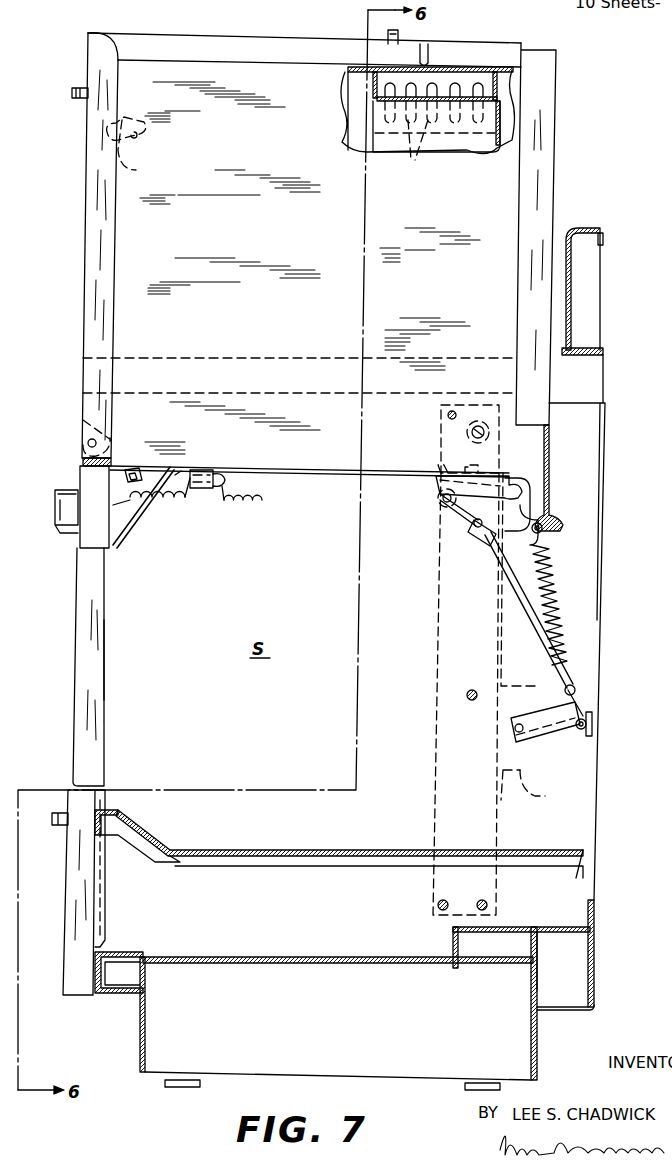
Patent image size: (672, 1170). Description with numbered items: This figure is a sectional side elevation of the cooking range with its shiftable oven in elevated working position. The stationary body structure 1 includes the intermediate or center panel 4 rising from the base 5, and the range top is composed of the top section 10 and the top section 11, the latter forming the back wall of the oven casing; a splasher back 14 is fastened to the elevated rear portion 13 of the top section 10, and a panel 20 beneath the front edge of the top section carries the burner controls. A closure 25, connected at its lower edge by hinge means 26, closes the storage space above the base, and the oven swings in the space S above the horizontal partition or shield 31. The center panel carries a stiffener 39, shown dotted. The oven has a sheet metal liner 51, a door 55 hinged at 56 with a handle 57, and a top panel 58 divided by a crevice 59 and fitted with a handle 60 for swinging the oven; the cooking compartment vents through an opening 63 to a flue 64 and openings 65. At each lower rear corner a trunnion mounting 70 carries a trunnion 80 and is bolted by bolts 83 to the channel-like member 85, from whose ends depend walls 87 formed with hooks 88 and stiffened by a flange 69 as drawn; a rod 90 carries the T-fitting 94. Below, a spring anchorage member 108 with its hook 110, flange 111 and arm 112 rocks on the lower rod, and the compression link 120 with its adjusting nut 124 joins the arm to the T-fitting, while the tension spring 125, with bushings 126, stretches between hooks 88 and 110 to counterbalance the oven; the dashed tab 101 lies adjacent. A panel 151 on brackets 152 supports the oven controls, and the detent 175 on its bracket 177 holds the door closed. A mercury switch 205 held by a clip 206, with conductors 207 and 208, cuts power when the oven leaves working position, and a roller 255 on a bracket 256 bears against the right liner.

The body structure 1 is at (68, 658).
The intermediate or center panel 4 is at (128, 707).
The base 5 is at (138, 1046).
The top section 10 is at (250, 350).
The top section 11 is at (546, 115).
The elevated rear portion 13 is at (574, 362).
The splasher back 14 is at (571, 280).
The panel 20 is at (110, 468).
The closure 25 is at (72, 900).
The hinge means 26 is at (94, 998).
The horizontal partition or shield 31 is at (250, 854).
The stiffener 39 is at (440, 706).
The sheet metal liner 51 is at (348, 87).
The door 55 is at (94, 238).
The hinge 56 is at (90, 430).
The handle 57 is at (59, 78).
The panel 58 is at (274, 43).
The crevice 59 is at (430, 44).
The handle 60 is at (386, 30).
The opening 63 is at (435, 95).
The flue 64 is at (352, 114).
The openings 65 is at (422, 152).
The latch member 69 is at (534, 495).
The trunnion mounting 70 is at (436, 432).
The trunnion 80 is at (478, 425).
The bolts 83 is at (440, 462).
The channel-like member 85 is at (440, 480).
The wall 87 is at (442, 498).
The spring connection or hook 88 is at (540, 526).
The rod 90 is at (442, 515).
The T-fitting 94 is at (474, 526).
The plate tab 101 is at (549, 790).
The spring anchorage member 108 is at (555, 742).
The spring anchorage hook 110 is at (590, 720).
The flange 111 is at (530, 710).
The arm 112 is at (549, 704).
The compression link 120 is at (502, 578).
The adjusting nut 124 is at (480, 542).
The tension spring 125 is at (544, 562).
The bushing 126 is at (539, 522).
The sheet metal panel 151 is at (55, 532).
The bracket 152 is at (130, 535).
The detent 175 is at (100, 133).
The bracket 177 is at (140, 174).
The mercury switch 205 is at (200, 490).
The clip 206 is at (225, 490).
The conductor 207 is at (240, 498).
The conductor 208 is at (150, 500).
The roller 255 is at (131, 468).
The bracket 256 is at (173, 470).